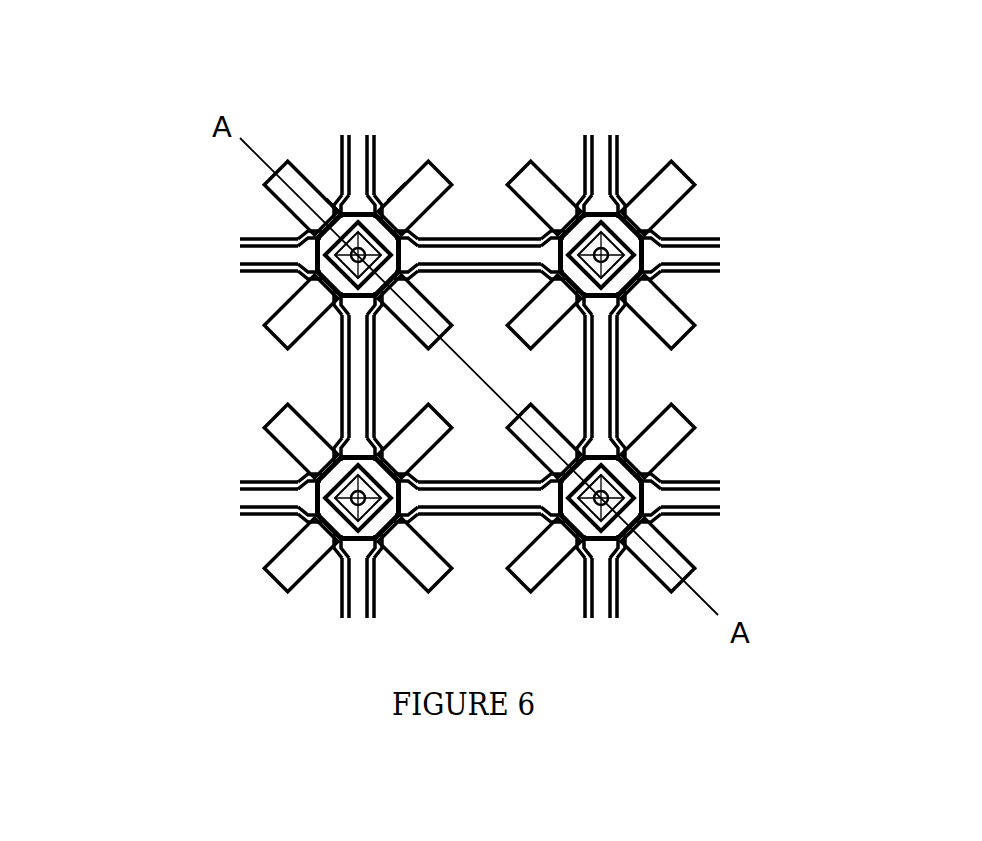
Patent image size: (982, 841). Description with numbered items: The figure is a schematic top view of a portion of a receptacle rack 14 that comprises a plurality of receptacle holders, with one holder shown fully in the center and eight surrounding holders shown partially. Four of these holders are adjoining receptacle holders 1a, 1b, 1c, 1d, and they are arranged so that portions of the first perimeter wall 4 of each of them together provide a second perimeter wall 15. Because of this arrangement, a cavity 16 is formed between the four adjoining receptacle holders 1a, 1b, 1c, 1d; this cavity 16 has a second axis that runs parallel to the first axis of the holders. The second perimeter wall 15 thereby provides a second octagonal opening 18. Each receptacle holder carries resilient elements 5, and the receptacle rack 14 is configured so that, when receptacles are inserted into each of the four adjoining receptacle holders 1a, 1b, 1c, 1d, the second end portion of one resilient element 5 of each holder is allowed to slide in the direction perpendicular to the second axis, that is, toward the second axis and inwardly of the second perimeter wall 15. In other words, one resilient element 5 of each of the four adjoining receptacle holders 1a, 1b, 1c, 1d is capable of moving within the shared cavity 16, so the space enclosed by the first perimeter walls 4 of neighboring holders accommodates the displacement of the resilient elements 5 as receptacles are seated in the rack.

The adjoining receptacle holder 1a is at (258, 212).
The adjoining receptacle holder 1b is at (600, 187).
The adjoining receptacle holder 1c is at (694, 449).
The adjoining receptacle holder 1d is at (249, 475).
The first perimeter wall 4 is at (352, 152).
The resilient element 5 is at (320, 194).
The receptacle rack 14 is at (464, 321).
The second perimeter wall 15 is at (317, 288).
The cavity 16 is at (397, 190).
The second octagonal opening 18 is at (333, 205).